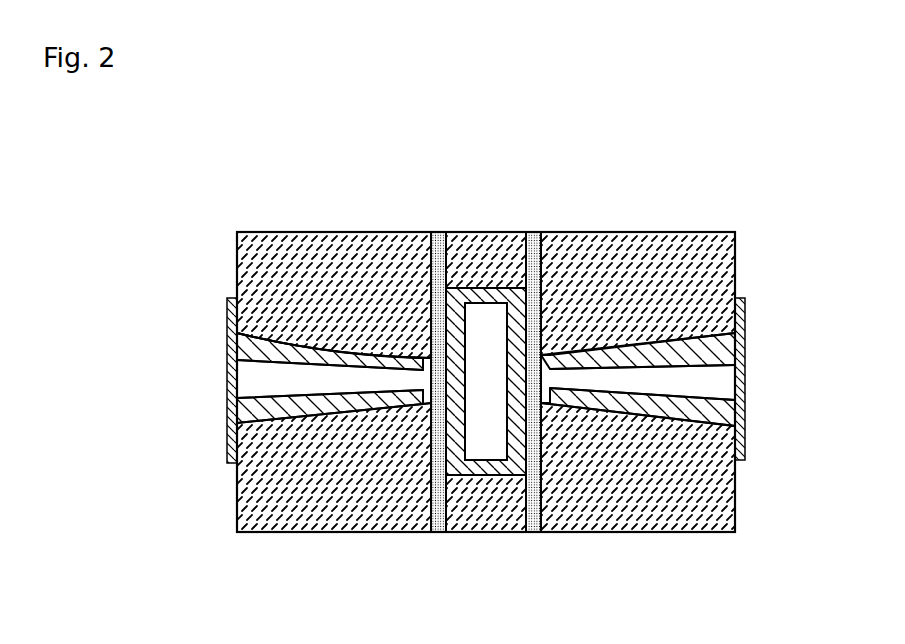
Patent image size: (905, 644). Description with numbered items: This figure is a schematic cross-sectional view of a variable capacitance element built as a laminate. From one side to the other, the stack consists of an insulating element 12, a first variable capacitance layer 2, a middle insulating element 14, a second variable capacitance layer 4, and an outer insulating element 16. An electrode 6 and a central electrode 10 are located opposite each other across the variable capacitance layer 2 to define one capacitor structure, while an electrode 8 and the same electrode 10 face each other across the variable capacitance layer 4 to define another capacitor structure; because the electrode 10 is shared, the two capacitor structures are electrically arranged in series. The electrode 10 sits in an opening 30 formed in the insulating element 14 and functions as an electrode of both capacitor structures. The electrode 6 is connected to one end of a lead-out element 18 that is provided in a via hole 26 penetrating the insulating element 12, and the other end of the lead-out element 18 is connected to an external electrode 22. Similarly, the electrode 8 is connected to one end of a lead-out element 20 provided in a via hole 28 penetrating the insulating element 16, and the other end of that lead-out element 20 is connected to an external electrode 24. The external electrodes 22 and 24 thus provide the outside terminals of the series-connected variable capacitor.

The variable capacitance layer 2 is at (438, 232).
The variable capacitance layer 4 is at (538, 232).
The electrode 6 is at (428, 352).
The electrode 8 is at (570, 410).
The electrode 10 is at (498, 465).
The insulating element 12 is at (310, 233).
The insulating element 14 is at (473, 517).
The insulating element 16 is at (665, 233).
The lead-out element 18 is at (295, 412).
The lead-out element 20 is at (673, 412).
The external electrode 22 is at (237, 333).
The external electrode 24 is at (735, 333).
The via hole 26 is at (253, 377).
The via hole 28 is at (720, 378).
The opening 30 is at (473, 443).